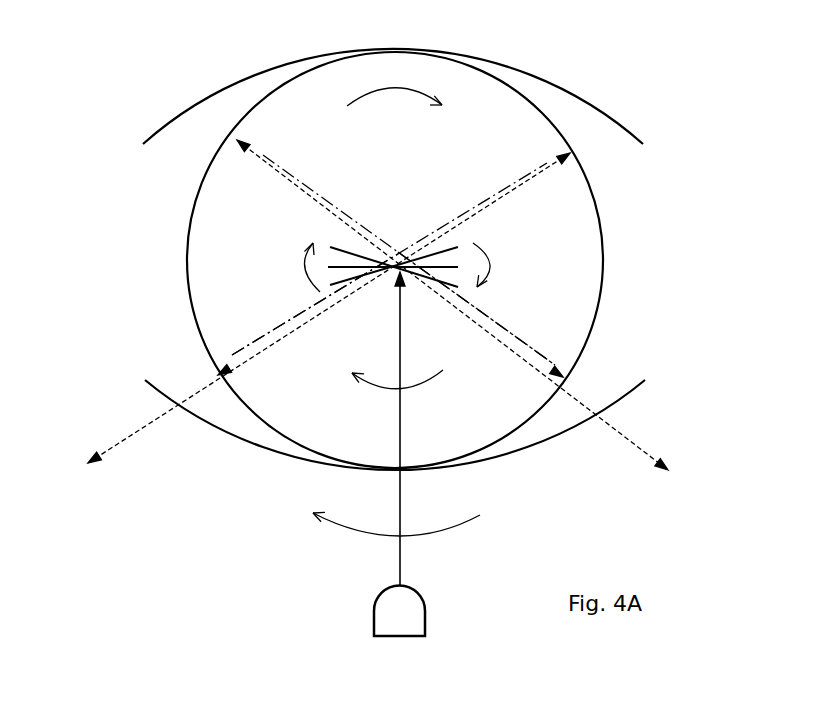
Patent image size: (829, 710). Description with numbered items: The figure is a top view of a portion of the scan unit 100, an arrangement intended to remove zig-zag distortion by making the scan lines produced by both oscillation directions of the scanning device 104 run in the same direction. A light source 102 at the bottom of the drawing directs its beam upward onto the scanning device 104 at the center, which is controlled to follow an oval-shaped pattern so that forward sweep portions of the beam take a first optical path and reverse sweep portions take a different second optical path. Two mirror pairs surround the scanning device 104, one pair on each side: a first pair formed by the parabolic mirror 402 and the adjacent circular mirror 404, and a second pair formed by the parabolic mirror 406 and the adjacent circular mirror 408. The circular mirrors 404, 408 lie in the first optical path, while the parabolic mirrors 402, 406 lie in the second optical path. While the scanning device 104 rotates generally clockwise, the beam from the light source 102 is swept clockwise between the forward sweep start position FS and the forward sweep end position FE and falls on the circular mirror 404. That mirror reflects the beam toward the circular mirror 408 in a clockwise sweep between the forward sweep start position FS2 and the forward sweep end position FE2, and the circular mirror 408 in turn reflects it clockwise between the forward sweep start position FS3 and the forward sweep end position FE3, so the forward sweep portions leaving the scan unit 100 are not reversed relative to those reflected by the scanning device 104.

The scan unit 100 is at (744, 62).
The light source 102 is at (417, 628).
The scanning device 104 is at (393, 233).
The parabolic mirror 402 is at (235, 443).
The circular mirror 404 is at (533, 430).
The parabolic mirror 406 is at (275, 68).
The circular mirror 408 is at (262, 98).
The forward sweep end position FE is at (250, 343).
The forward sweep end position FE2 is at (513, 187).
The forward sweep end position FE3 is at (122, 440).
The forward sweep start position FS is at (512, 340).
The forward sweep start position FS2 is at (270, 153).
The forward sweep start position FS3 is at (637, 443).